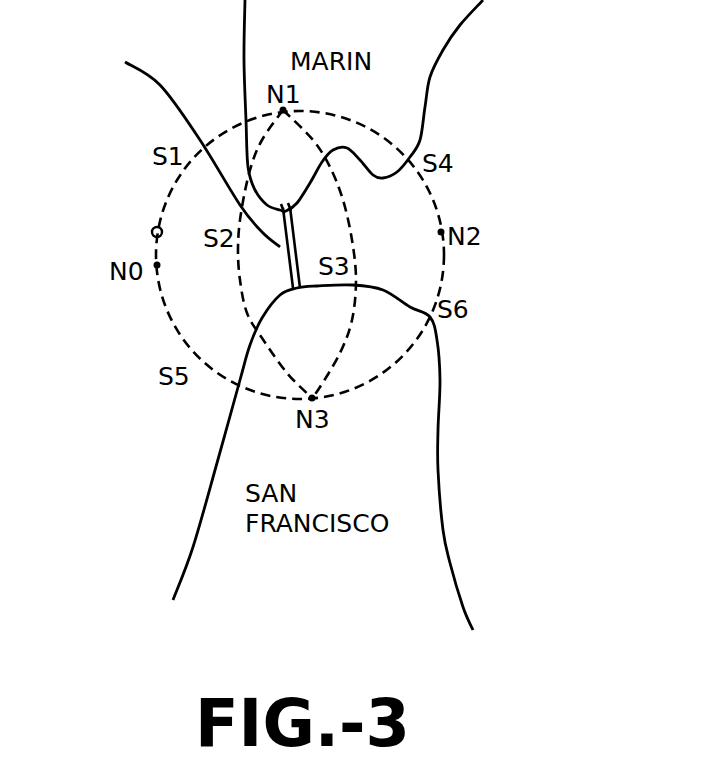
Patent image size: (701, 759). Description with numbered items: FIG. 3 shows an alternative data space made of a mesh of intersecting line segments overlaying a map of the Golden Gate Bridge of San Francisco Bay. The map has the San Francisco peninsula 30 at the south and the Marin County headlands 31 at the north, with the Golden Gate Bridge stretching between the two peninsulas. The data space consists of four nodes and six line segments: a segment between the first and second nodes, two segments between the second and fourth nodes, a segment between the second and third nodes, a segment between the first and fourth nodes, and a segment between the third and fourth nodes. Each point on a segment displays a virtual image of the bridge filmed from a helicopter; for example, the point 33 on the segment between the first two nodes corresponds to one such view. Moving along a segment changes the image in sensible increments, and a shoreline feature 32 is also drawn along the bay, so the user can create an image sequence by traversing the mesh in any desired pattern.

The San Francisco peninsula 30 is at (440, 470).
The Marin County headlands 31 is at (430, 75).
The boundary line 32 is at (182, 149).
The point on line segment S1 33 is at (152, 226).